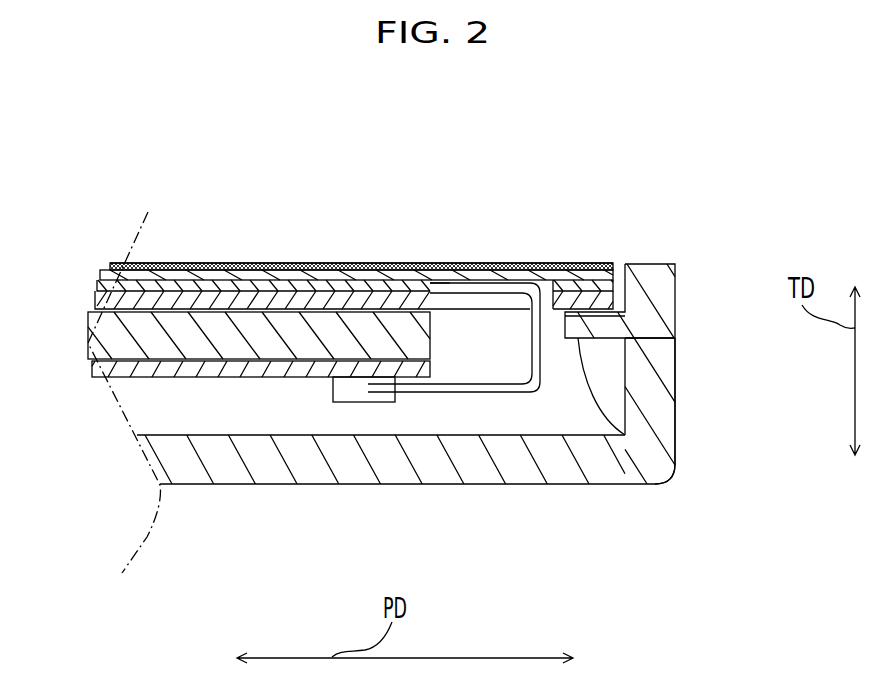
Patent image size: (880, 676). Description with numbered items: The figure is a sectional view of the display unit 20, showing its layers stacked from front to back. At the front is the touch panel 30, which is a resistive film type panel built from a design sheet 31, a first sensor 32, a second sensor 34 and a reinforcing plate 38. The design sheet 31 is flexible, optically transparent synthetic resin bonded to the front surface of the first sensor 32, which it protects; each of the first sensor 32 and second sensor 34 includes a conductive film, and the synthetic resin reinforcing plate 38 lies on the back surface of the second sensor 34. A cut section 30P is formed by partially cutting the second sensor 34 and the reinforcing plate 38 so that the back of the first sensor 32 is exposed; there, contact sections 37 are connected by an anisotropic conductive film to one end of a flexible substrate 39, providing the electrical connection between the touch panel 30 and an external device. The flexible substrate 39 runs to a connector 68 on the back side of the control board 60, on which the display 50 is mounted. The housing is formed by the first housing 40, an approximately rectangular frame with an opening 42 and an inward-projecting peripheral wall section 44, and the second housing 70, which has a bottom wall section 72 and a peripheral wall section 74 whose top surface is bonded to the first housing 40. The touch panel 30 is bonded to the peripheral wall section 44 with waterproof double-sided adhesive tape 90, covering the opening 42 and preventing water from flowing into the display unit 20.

The display unit 20 is at (583, 186).
The touch panel 30 is at (353, 251).
The cut section 30P is at (443, 282).
The design sheet 31 is at (266, 262).
The first sensor 32 is at (115, 267).
The second sensor 34 is at (102, 284).
The contact sections 37 is at (541, 270).
The reinforcing plate 38 is at (98, 297).
The flexible substrate 39 is at (499, 394).
The first housing 40 is at (690, 317).
The opening 42 is at (552, 320).
The peripheral wall section 44 is at (598, 331).
The display 50 is at (90, 340).
The control board 60 is at (105, 370).
The connector 68 is at (333, 390).
The second housing 70 is at (648, 496).
The bottom wall section 72 is at (408, 437).
The peripheral wall section 74 is at (655, 413).
The double-sided adhesive tape 90 is at (645, 368).